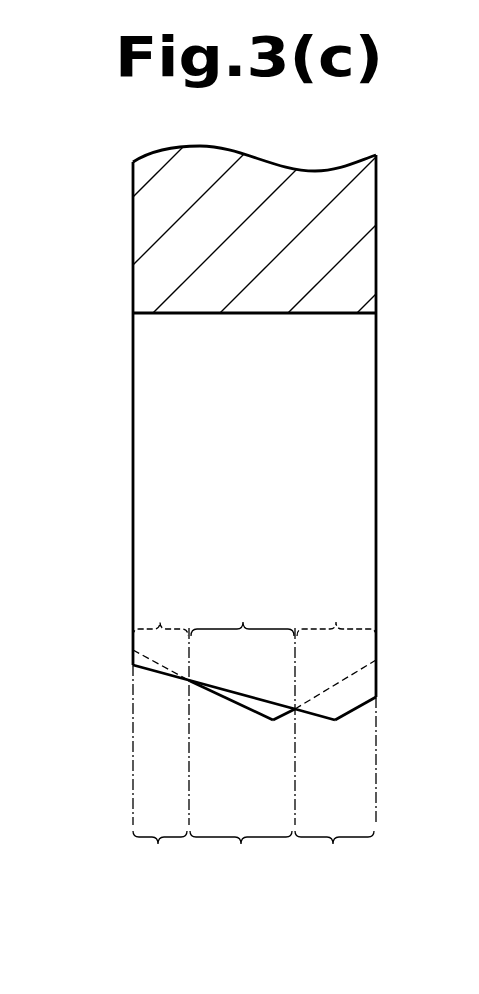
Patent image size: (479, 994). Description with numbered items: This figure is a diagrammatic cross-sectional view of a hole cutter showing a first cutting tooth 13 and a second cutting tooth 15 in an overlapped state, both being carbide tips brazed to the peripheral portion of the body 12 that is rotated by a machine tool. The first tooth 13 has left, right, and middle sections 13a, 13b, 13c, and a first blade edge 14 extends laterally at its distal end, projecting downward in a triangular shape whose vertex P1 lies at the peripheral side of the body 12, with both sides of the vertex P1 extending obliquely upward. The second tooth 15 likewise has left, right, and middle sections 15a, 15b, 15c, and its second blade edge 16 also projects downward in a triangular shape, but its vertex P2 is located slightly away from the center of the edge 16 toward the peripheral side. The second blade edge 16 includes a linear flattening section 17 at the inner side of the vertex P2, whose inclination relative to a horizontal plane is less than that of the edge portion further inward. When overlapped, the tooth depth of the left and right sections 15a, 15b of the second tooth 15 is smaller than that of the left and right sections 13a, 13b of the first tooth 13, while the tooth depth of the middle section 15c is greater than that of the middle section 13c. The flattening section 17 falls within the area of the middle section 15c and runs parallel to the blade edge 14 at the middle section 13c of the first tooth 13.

The body 12 is at (323, 182).
The first cutting tooth 13 is at (363, 430).
The left section of first tooth 13a is at (157, 861).
The right section of first tooth 13b is at (334, 861).
The middle section of first tooth 13c is at (242, 609).
The first blade edge 14 is at (312, 714).
The second cutting tooth 15 is at (352, 673).
The left section of second tooth 15a is at (162, 609).
The right section of second tooth 15b is at (336, 609).
The middle section of second tooth 15c is at (241, 861).
The second blade edge 16 is at (207, 695).
The flattening section 17 is at (248, 715).
The vertex of first blade edge P1 is at (336, 721).
The vertex of second blade edge P2 is at (272, 722).